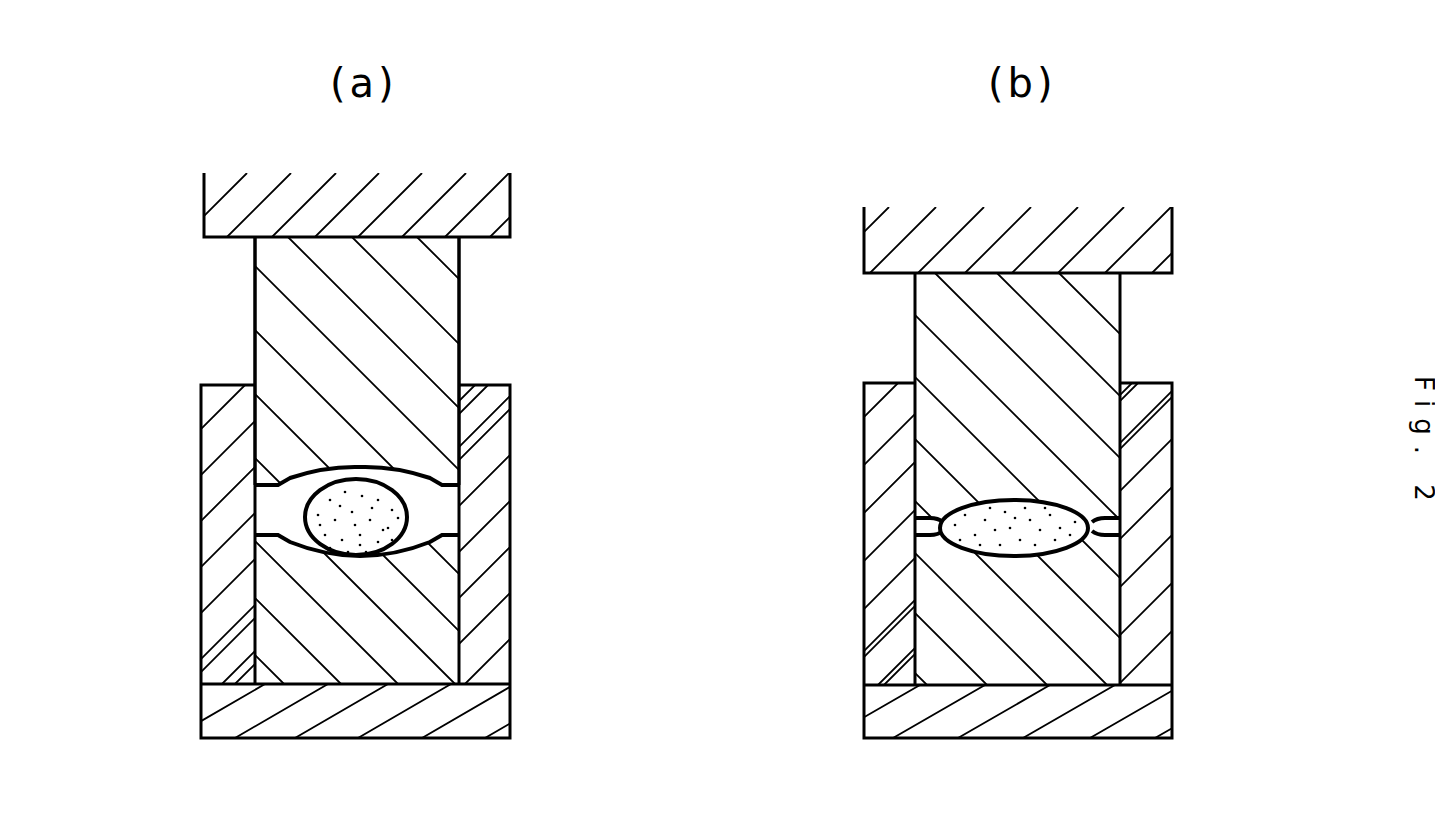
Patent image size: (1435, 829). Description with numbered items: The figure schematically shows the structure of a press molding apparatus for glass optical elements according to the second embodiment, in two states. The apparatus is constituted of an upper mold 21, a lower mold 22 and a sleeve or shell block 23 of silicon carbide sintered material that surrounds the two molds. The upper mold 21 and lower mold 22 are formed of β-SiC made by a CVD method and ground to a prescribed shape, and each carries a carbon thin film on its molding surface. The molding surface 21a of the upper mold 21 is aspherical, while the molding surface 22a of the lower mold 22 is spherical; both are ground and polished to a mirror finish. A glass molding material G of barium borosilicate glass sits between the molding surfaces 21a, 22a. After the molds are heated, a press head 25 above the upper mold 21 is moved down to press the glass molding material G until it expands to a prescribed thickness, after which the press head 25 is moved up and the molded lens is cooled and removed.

The press head 25 is at (480, 203).
The upper mold 21 is at (438, 312).
The molding surface of the upper mold 21a is at (390, 466).
The sleeve (shell block) 23 is at (488, 512).
The lower mold 22 is at (425, 645).
The molding surface of the lower mold 22a is at (428, 540).
The glass molding material G is at (328, 520).